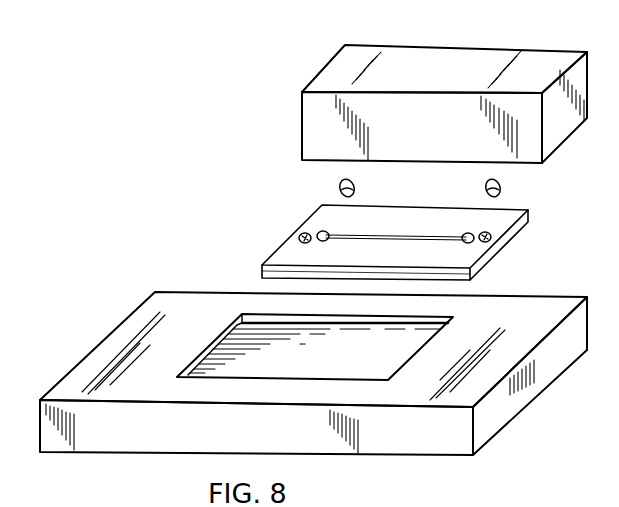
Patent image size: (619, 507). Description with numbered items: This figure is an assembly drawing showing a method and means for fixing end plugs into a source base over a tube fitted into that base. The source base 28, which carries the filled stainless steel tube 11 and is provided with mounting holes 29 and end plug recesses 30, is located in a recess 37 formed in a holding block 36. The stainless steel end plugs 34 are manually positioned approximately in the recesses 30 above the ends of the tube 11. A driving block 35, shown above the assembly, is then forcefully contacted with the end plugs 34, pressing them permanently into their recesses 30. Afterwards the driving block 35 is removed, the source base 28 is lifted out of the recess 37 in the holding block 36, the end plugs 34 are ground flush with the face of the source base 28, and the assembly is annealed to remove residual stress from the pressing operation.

The filled stainless steel tube 11 is at (262, 268).
The source base 28 is at (323, 217).
The mounting holes 29 is at (492, 233).
The end plug recesses 30 is at (470, 242).
The end plugs 34 is at (342, 188).
The driving block 35 is at (330, 72).
The holding block 36 is at (147, 317).
The recess 37 is at (237, 357).